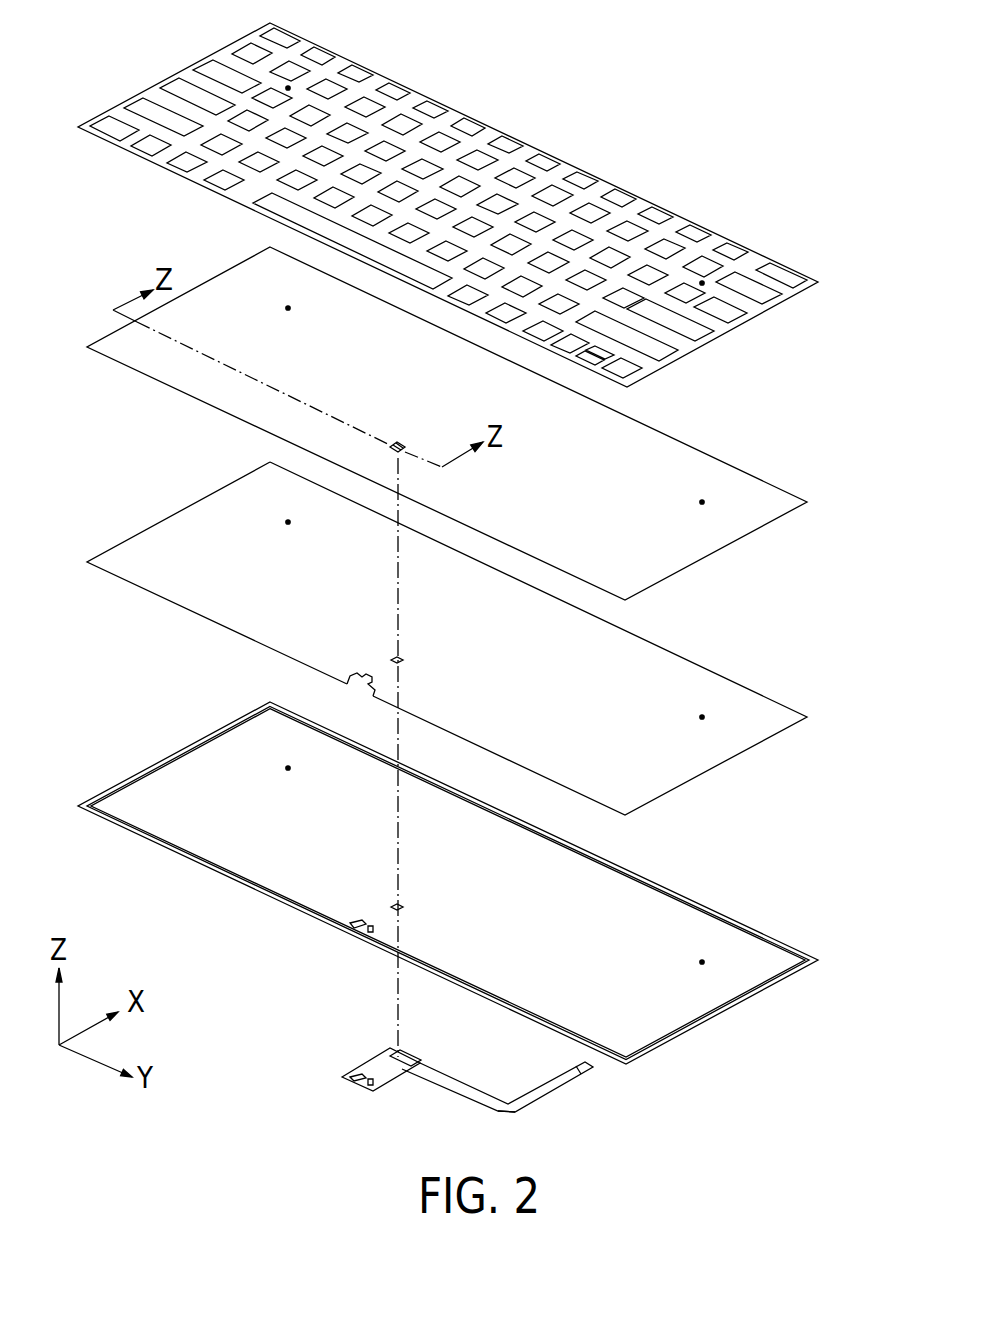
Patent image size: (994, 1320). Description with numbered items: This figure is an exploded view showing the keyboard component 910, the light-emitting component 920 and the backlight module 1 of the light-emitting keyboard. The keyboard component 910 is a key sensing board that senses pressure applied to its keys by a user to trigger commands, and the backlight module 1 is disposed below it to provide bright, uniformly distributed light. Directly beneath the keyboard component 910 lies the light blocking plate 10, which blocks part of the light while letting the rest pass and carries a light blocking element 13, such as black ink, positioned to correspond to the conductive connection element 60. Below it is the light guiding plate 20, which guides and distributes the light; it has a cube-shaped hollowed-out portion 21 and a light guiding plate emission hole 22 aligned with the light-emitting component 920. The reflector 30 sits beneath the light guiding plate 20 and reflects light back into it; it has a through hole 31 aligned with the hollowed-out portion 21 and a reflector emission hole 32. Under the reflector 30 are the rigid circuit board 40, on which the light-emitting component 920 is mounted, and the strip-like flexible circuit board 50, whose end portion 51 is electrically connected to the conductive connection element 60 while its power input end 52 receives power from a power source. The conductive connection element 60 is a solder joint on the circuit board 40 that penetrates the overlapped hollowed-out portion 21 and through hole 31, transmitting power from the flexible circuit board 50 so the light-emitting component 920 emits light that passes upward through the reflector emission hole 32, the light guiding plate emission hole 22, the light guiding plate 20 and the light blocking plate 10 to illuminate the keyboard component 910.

The backlight module 1 is at (247, 1090).
The keyboard component 910 is at (583, 170).
The light blocking plate 10 is at (447, 423).
The light blocking element 13 is at (398, 440).
The light guiding plate 20 is at (447, 638).
The hollowed-out portion 21 is at (403, 660).
The light guiding plate emission hole 22 is at (353, 676).
The reflector 30 is at (448, 883).
The through hole 31 is at (403, 907).
The reflector emission hole 32 is at (352, 922).
The circuit board 40 is at (358, 1068).
The flexible circuit board 50 is at (521, 1105).
The end portion 51 is at (407, 1072).
The power input end 52 is at (595, 1068).
The conductive connection element 60 is at (397, 1056).
The light-emitting component 920 is at (353, 1077).